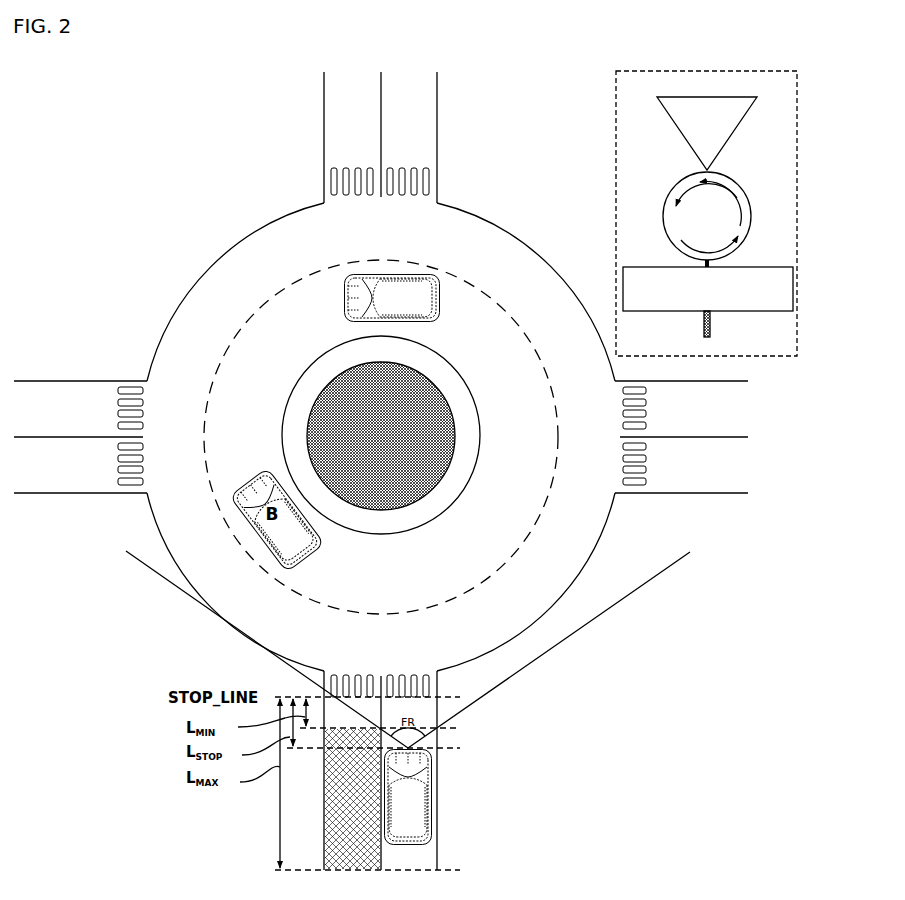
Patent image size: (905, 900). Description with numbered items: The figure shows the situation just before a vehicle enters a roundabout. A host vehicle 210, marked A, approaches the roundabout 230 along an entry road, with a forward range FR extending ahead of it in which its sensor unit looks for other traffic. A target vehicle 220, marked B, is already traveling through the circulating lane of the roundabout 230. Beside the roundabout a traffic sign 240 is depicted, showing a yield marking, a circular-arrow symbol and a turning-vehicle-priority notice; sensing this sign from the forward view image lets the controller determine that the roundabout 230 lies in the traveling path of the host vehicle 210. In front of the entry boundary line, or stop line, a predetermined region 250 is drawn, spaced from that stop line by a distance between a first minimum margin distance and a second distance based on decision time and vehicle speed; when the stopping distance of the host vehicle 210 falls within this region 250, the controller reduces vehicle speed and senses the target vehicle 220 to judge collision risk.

The host vehicle 210 is at (417, 797).
The target vehicle 220 is at (300, 523).
The roundabout 230 is at (186, 254).
The traffic sign 240 is at (797, 231).
The predetermined region 250 is at (337, 846).